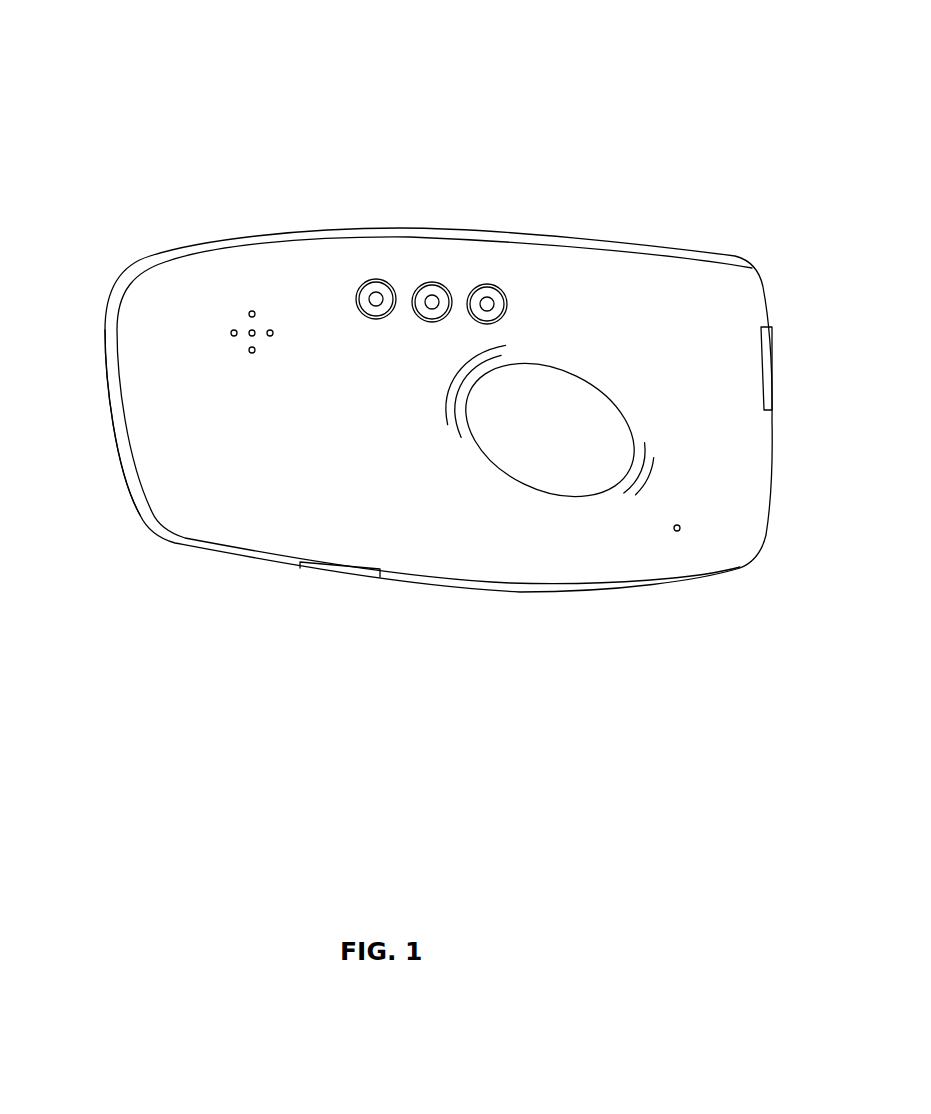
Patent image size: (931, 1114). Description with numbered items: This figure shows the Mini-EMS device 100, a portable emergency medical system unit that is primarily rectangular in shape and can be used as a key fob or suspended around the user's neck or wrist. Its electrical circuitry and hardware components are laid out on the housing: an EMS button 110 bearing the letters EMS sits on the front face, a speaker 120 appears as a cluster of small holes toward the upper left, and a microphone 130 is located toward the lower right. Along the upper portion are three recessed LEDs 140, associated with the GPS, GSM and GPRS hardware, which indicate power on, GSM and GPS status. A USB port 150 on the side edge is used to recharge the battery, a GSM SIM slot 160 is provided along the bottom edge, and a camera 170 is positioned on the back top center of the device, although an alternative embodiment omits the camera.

The Mini-EMS device 100 is at (313, 97).
The EMS button 110 is at (577, 378).
The speaker 120 is at (249, 312).
The microphone 130 is at (673, 533).
The recessed LEDs (GPS, GSM-Quad 4, GPRS) 140 is at (358, 292).
The USB port 150 is at (768, 338).
The GSM SIM slot 160 is at (352, 578).
The camera 170 is at (112, 435).